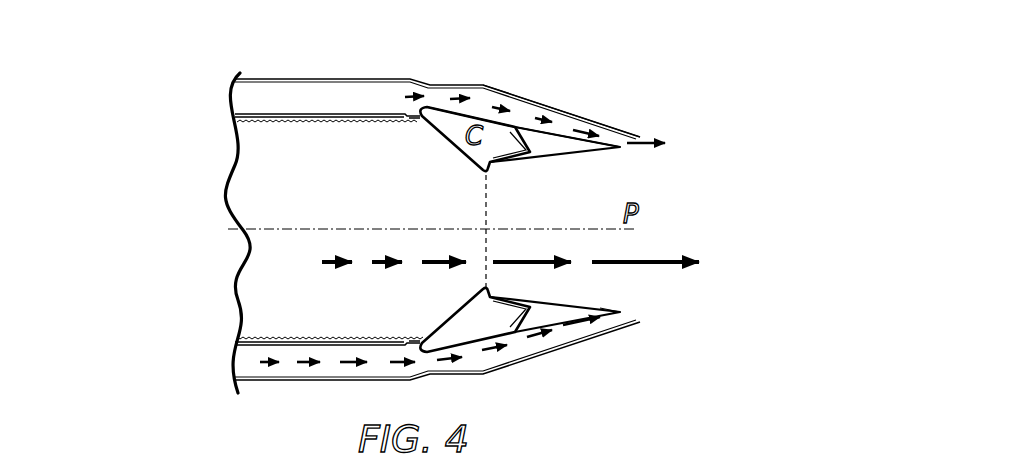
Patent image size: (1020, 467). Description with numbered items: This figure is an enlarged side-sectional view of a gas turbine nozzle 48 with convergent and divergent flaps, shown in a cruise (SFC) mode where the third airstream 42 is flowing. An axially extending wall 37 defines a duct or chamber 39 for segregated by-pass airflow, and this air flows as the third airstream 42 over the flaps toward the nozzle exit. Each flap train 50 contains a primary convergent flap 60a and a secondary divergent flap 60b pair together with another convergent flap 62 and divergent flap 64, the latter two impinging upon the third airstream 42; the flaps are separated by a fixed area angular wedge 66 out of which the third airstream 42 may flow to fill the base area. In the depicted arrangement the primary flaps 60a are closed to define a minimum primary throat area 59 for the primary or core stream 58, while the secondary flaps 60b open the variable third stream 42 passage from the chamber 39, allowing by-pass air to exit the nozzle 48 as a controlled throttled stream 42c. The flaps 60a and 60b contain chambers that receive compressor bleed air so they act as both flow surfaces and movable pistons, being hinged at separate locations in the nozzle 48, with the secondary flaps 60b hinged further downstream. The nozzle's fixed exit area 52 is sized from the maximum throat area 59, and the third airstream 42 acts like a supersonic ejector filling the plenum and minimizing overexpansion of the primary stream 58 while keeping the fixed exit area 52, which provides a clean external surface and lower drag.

The axially extending wall 37 is at (312, 112).
The chamber 39 is at (267, 88).
The third airstream 42 is at (588, 130).
The throttled stream 42c is at (653, 140).
The nozzle 48 is at (540, 100).
The flap train 50 is at (410, 305).
The fixed exit area 52 is at (642, 307).
The primary stream 58 is at (336, 252).
The primary throat area 59 is at (433, 216).
The primary convergent flap 60a is at (450, 145).
The secondary divergent flap 60b is at (533, 163).
The convergent flap 62 is at (482, 118).
The divergent flap 64 is at (563, 140).
The fixed area angular wedge 66 is at (530, 143).